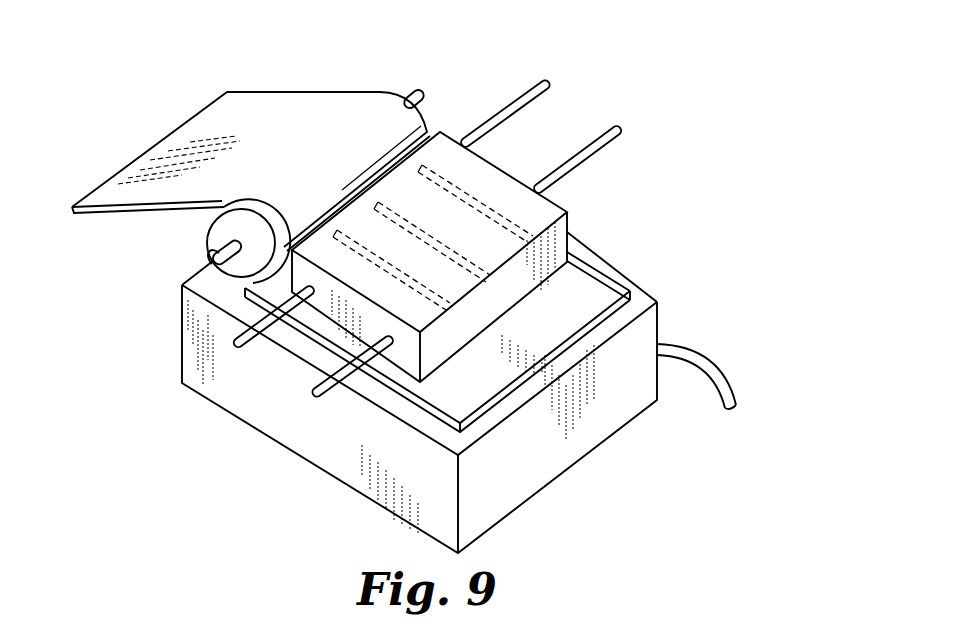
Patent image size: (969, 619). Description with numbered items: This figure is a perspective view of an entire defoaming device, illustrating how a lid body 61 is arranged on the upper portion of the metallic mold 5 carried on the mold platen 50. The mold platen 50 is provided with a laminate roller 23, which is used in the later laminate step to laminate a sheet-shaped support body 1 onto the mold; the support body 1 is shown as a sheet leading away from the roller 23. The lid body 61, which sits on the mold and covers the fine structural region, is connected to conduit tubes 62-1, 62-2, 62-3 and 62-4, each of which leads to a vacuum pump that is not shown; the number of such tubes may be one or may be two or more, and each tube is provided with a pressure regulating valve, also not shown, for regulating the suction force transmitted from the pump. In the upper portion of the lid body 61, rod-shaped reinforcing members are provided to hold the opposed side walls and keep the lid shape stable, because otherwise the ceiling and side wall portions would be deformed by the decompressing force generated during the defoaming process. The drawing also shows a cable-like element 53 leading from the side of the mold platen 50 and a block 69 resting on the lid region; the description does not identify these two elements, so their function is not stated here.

The sheet-shaped support body 1 is at (258, 113).
The laminate roller 23 is at (218, 223).
The metallic mold 5 is at (590, 297).
The mold platen 50 is at (603, 422).
The cable 53 is at (722, 373).
The lid body 61 is at (445, 337).
The heat generating block 69 is at (578, 207).
The conduit tube 62-1 is at (250, 350).
The conduit tube 62-2 is at (327, 400).
The conduit tube 62-3 is at (541, 82).
The conduit tube 62-4 is at (607, 130).